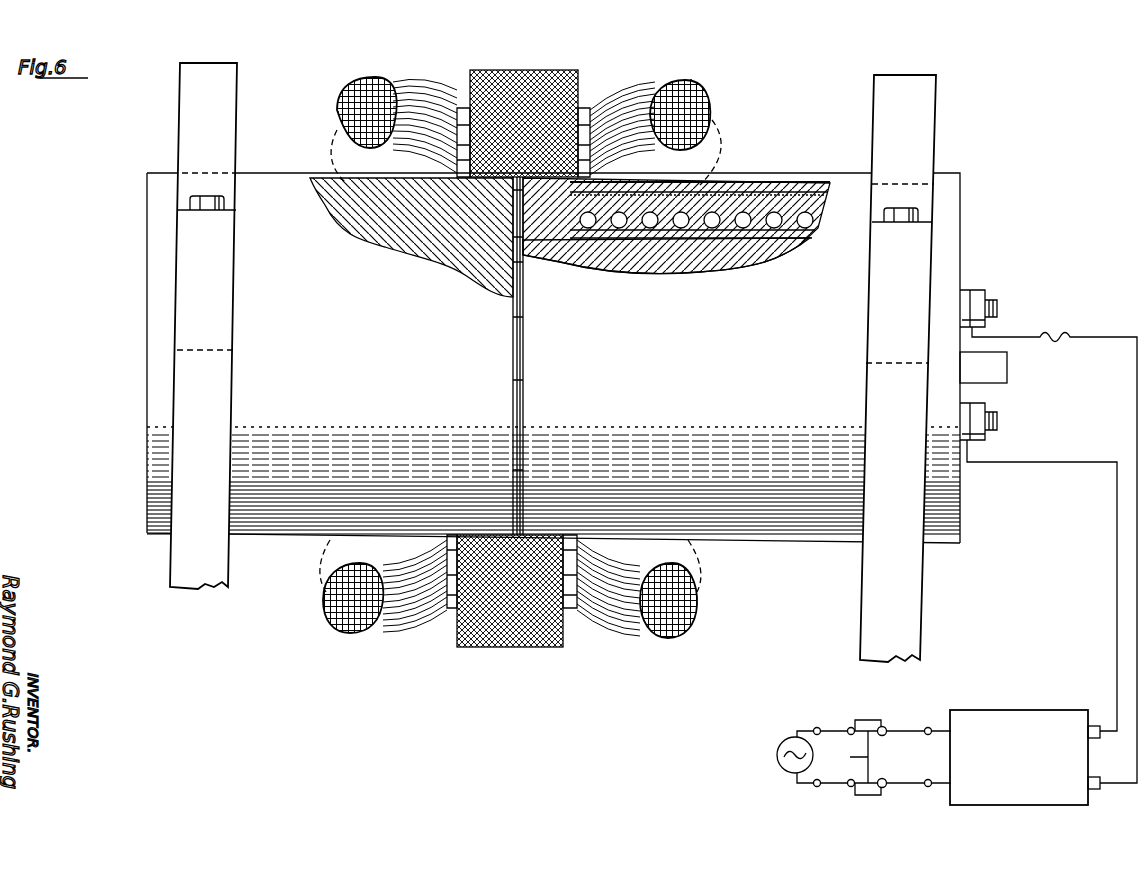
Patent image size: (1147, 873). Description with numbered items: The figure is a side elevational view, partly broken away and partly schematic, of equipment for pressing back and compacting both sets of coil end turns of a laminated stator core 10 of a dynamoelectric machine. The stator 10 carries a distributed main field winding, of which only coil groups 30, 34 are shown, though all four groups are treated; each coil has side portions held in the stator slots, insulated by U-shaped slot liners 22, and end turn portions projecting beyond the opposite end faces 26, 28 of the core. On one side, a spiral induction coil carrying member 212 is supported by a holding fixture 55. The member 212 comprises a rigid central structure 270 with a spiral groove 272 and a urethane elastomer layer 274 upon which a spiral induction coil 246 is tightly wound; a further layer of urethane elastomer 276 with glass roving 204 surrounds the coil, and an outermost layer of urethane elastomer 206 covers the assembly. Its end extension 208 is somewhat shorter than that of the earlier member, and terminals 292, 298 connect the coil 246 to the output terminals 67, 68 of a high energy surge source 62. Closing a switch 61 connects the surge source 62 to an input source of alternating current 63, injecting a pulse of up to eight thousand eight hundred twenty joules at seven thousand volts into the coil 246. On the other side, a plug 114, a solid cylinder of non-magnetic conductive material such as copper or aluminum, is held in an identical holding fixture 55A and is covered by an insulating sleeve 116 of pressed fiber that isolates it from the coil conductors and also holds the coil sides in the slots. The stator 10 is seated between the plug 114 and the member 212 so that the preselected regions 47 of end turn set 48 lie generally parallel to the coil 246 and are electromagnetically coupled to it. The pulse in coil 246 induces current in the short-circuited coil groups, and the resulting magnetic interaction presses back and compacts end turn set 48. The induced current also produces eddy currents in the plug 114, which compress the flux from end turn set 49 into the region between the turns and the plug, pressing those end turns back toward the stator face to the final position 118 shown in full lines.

The stator core 10 is at (584, 61).
The slot liner 22 is at (467, 99).
The end face 26 is at (458, 628).
The end face 28 is at (565, 628).
The coil group 30 is at (677, 70).
The coil group 34 is at (708, 628).
The preselected regions 47 is at (702, 84).
The end turn set 48 is at (718, 104).
The end turn set 49 is at (328, 105).
The holding fixture 55 is at (941, 131).
The holding fixture 55A is at (170, 123).
The switch 61 is at (906, 724).
The surge source 62 is at (1022, 790).
The input source of alternating current 63 is at (767, 753).
The output terminal 67 is at (1096, 726).
The output terminal 68 is at (1093, 790).
The plug 114 is at (355, 195).
The sleeve 116 is at (368, 327).
The final position of end turn portions 118 is at (366, 80).
The glass roving 204 is at (793, 185).
The outermost layer of urethane elastomer 206 is at (712, 190).
The end extension 208 is at (558, 255).
The spiral induction coil carrying member 212 is at (686, 223).
The spiral induction coil 246 is at (690, 230).
The rigid central structure 270 is at (785, 255).
The spiral groove 272 is at (765, 195).
The urethane elastomer layer 274 is at (735, 200).
The layer of urethane elastomer 276 is at (812, 190).
The terminal 292 is at (990, 300).
The terminal 298 is at (995, 422).